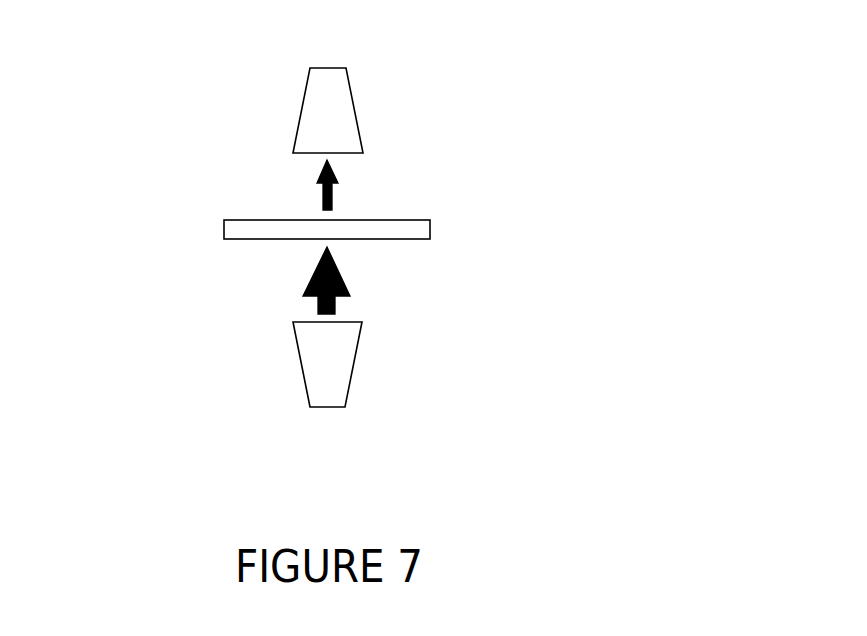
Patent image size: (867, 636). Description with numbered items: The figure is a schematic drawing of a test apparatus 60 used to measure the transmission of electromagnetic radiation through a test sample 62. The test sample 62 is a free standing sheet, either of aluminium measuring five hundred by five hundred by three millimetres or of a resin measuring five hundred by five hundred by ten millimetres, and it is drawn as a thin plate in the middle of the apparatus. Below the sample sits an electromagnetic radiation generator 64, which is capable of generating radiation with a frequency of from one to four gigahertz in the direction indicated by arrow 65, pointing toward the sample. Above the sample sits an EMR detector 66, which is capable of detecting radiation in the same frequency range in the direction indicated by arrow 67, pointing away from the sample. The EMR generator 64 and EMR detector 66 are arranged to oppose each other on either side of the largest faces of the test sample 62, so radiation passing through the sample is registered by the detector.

The test apparatus 60 is at (196, 346).
The test sample 62 is at (418, 239).
The electromagnetic radiation (EMR) generator 64 is at (353, 384).
The arrow 65 is at (312, 280).
The EMR detector 66 is at (355, 107).
The arrow 67 is at (332, 195).